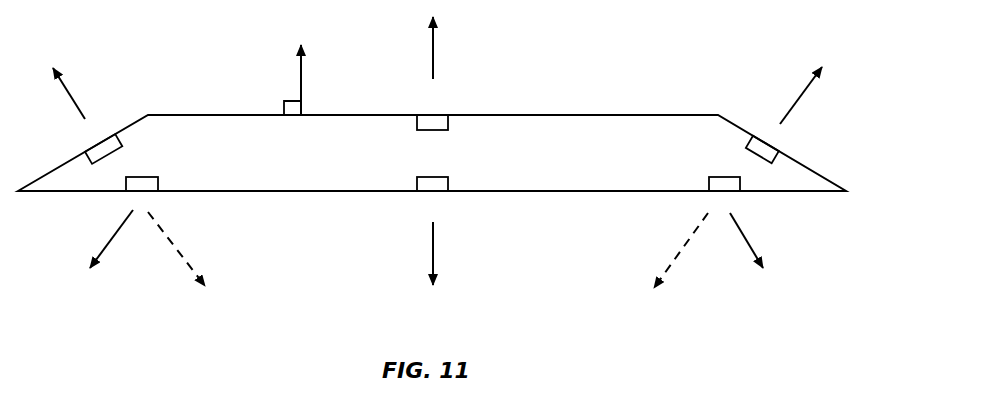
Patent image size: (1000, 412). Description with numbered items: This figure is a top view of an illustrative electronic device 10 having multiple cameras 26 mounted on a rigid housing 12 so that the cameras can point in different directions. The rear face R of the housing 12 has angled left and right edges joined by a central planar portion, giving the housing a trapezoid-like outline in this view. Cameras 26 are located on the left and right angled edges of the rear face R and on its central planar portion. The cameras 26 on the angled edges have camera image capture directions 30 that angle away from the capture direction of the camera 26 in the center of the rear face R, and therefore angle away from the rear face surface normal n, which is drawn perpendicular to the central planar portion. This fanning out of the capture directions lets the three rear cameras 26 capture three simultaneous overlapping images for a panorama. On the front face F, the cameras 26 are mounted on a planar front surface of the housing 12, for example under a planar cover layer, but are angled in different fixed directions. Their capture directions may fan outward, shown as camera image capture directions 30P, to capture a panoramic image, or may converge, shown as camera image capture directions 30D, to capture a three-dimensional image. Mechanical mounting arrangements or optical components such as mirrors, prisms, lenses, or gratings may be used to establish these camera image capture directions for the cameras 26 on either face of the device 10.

The electronic device 10 is at (885, 79).
The housing 12 is at (810, 163).
The cameras 26 is at (118, 157).
The camera image capture directions 30 is at (67, 88).
The camera image capture directions 30P is at (108, 242).
The camera image capture directions 30D is at (178, 246).
The rear face R is at (581, 89).
The front face F is at (544, 249).
The rear face surface normal n is at (284, 103).